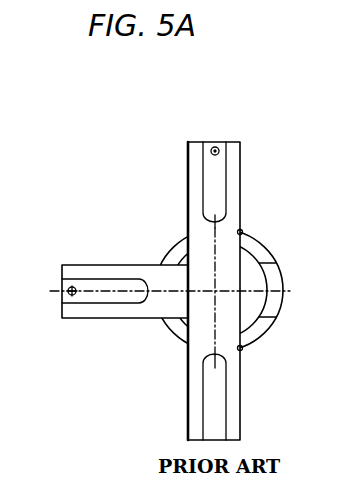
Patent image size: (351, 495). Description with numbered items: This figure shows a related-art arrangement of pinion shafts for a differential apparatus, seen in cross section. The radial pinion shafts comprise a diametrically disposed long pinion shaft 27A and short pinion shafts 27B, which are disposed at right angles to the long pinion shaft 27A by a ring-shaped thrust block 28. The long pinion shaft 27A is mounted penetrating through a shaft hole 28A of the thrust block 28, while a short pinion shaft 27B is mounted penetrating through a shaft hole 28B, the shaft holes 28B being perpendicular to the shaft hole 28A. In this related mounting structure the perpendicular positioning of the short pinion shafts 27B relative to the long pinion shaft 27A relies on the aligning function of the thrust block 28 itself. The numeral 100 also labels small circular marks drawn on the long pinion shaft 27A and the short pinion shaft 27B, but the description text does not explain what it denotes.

The positioning hole 100 is at (219, 148).
The long pinion shaft 27A is at (241, 175).
The short pinion shaft 27B is at (95, 319).
The thrust block 28 is at (259, 340).
The shaft hole 28A is at (242, 230).
The shaft hole 28B is at (275, 268).